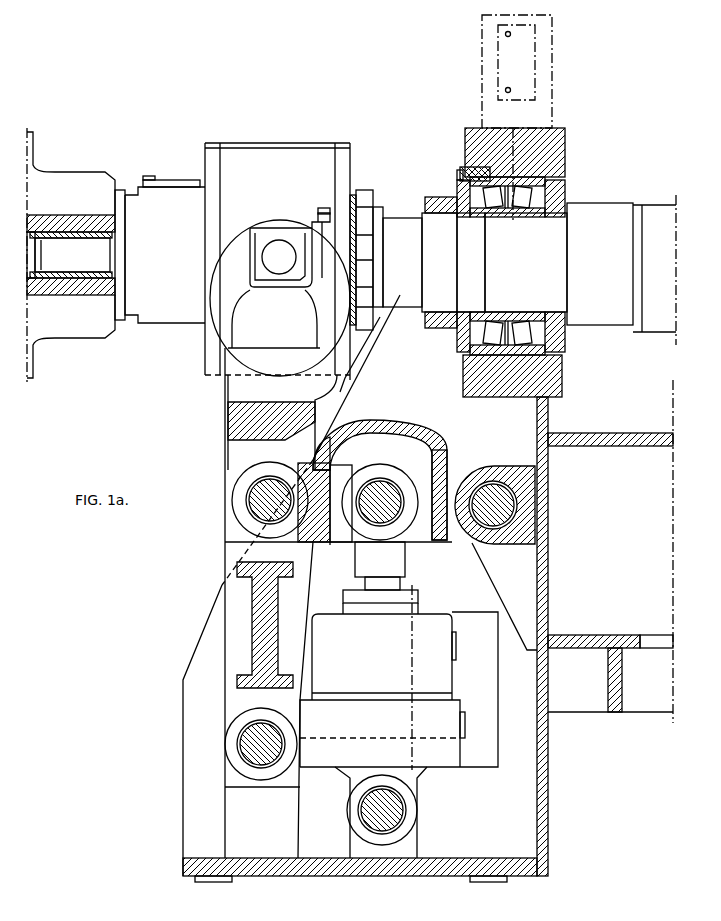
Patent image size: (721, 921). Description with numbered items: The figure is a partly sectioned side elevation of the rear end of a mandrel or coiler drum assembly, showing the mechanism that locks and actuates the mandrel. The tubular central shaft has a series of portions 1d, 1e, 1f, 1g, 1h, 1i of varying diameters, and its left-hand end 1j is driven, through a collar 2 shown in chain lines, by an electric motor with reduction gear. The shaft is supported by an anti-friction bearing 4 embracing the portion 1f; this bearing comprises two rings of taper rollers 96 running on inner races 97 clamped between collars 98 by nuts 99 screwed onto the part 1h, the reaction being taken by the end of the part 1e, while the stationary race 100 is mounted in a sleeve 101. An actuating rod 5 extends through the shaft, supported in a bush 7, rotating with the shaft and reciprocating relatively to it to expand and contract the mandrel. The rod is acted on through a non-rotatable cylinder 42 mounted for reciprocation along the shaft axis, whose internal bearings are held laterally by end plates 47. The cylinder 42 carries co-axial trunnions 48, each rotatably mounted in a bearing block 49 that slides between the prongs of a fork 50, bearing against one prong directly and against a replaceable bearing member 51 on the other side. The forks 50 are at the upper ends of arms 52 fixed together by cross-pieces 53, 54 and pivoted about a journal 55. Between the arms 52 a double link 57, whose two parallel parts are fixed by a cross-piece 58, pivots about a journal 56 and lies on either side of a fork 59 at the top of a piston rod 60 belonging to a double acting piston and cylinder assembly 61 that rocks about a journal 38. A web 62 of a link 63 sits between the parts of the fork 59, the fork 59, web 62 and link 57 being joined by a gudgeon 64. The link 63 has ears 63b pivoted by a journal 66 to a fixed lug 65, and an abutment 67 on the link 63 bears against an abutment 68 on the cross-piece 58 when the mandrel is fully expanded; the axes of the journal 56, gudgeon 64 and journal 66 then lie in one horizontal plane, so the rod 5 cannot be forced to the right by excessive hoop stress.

The shaft portion 1d is at (653, 215).
The shaft portion 1e is at (612, 215).
The shaft portion 1f is at (555, 290).
The shaft portion 1g is at (473, 292).
The shaft portion 1h is at (430, 298).
The shaft portion 1i is at (405, 233).
The shaft end portion 1j is at (95, 225).
The collar 2 is at (97, 330).
The anti-friction bearing 4 is at (452, 360).
The actuating rod 5 is at (68, 263).
The bush 7 is at (101, 213).
The journal 38 is at (397, 810).
The cylinder 42 is at (294, 145).
The end plates 47 is at (212, 160).
The trunnions 48 is at (275, 257).
The bearing block 49 is at (263, 236).
The fork 50 is at (233, 297).
The replaceable bearing member 51 is at (318, 222).
The arms 52 is at (242, 386).
The cross-piece 53 is at (242, 420).
The cross-piece 54 is at (267, 615).
The journal 55 is at (242, 742).
The journal 56 is at (252, 499).
The double link 57 is at (302, 455).
The cross-piece 58 is at (323, 543).
The fork 59 is at (407, 516).
The piston rod 60 is at (383, 583).
The piston and cylinder assembly 61 is at (442, 670).
The web 62 is at (383, 458).
The link 63 is at (425, 430).
The ears 63b is at (473, 543).
The gudgeon 64 is at (382, 485).
The fixed lug 65 is at (537, 480).
The journal 66 is at (506, 505).
The abutment 67 is at (330, 436).
The abutment 68 is at (337, 457).
The taper rollers 96 is at (492, 213).
The inner races 97 is at (530, 213).
The collars 98 is at (478, 214).
The nuts 99 is at (445, 215).
The stationary race 100 is at (510, 133).
The sleeve 101 is at (468, 167).